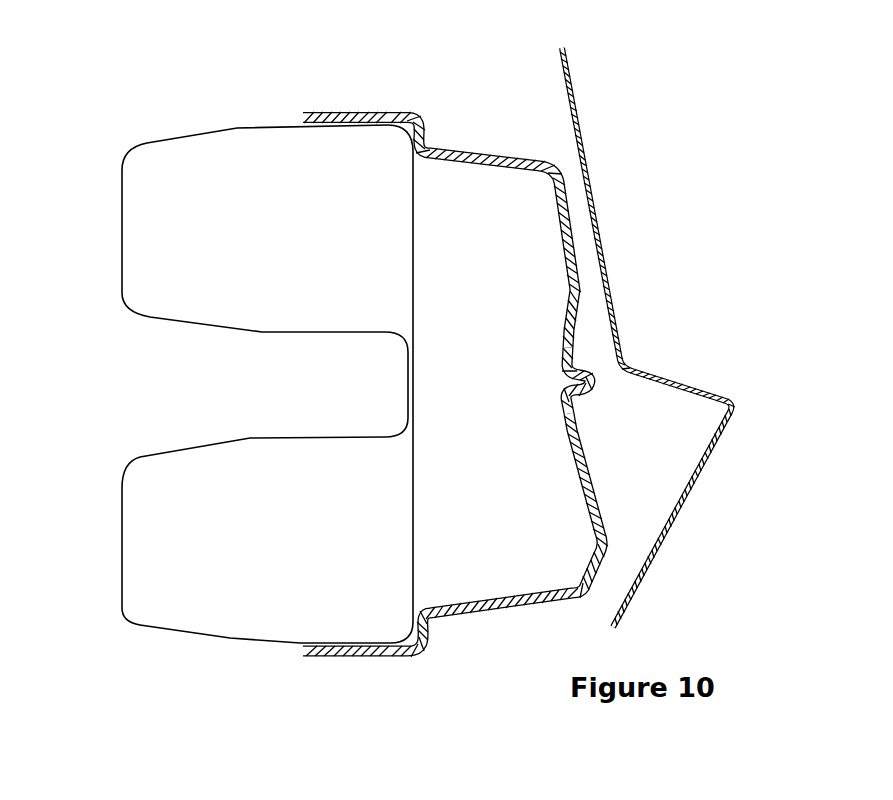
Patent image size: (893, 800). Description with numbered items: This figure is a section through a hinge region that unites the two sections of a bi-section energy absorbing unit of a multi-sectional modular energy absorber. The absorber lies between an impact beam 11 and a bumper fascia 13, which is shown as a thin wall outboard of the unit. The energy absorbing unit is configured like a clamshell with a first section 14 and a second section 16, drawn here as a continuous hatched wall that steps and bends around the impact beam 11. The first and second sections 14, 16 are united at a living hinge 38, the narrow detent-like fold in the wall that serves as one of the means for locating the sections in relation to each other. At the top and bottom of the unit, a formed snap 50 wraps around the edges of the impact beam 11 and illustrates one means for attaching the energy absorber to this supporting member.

The impact beam 11 is at (123, 543).
The bumper fascia 13 is at (587, 160).
The first section 14 is at (517, 173).
The second section 16 is at (553, 587).
The living hinge 38 is at (588, 368).
The formed snap 50 is at (385, 678).